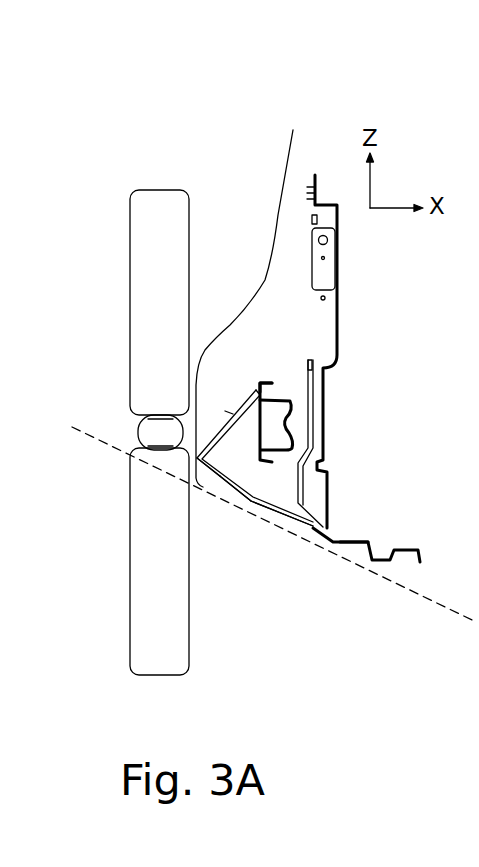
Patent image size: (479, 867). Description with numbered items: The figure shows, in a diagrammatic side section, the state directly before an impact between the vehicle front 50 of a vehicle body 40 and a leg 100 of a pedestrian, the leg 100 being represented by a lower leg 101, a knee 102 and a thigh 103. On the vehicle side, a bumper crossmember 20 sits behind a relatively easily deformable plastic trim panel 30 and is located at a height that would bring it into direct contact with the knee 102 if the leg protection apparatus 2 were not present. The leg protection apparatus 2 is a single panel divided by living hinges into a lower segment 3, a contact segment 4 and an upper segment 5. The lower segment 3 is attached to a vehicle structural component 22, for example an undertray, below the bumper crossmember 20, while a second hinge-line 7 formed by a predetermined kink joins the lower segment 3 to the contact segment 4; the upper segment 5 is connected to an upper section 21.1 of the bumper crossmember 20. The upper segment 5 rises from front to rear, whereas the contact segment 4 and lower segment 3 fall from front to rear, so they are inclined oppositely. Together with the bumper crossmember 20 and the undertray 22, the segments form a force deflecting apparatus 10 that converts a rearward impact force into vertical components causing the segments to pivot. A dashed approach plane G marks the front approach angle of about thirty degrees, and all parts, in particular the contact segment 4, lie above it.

The leg 100 is at (115, 425).
The lower leg 101 is at (183, 576).
The knee 102 is at (138, 433).
The thigh 103 is at (183, 318).
The upper segment 5 is at (230, 413).
The vehicle front 50 is at (219, 178).
The trim panel 30 is at (268, 210).
The vehicle body 40 is at (334, 110).
The vehicle structural component 22 is at (357, 560).
The force deflecting apparatus 10 is at (282, 463).
The bumper crossmember 20 is at (333, 375).
The hook portion 21.1 is at (266, 365).
The leg protection apparatus 2 is at (261, 533).
The lower segment 3 is at (288, 531).
The contact segment 4 is at (210, 481).
The second hinge-line 7 is at (247, 507).
The approach plane G is at (403, 588).